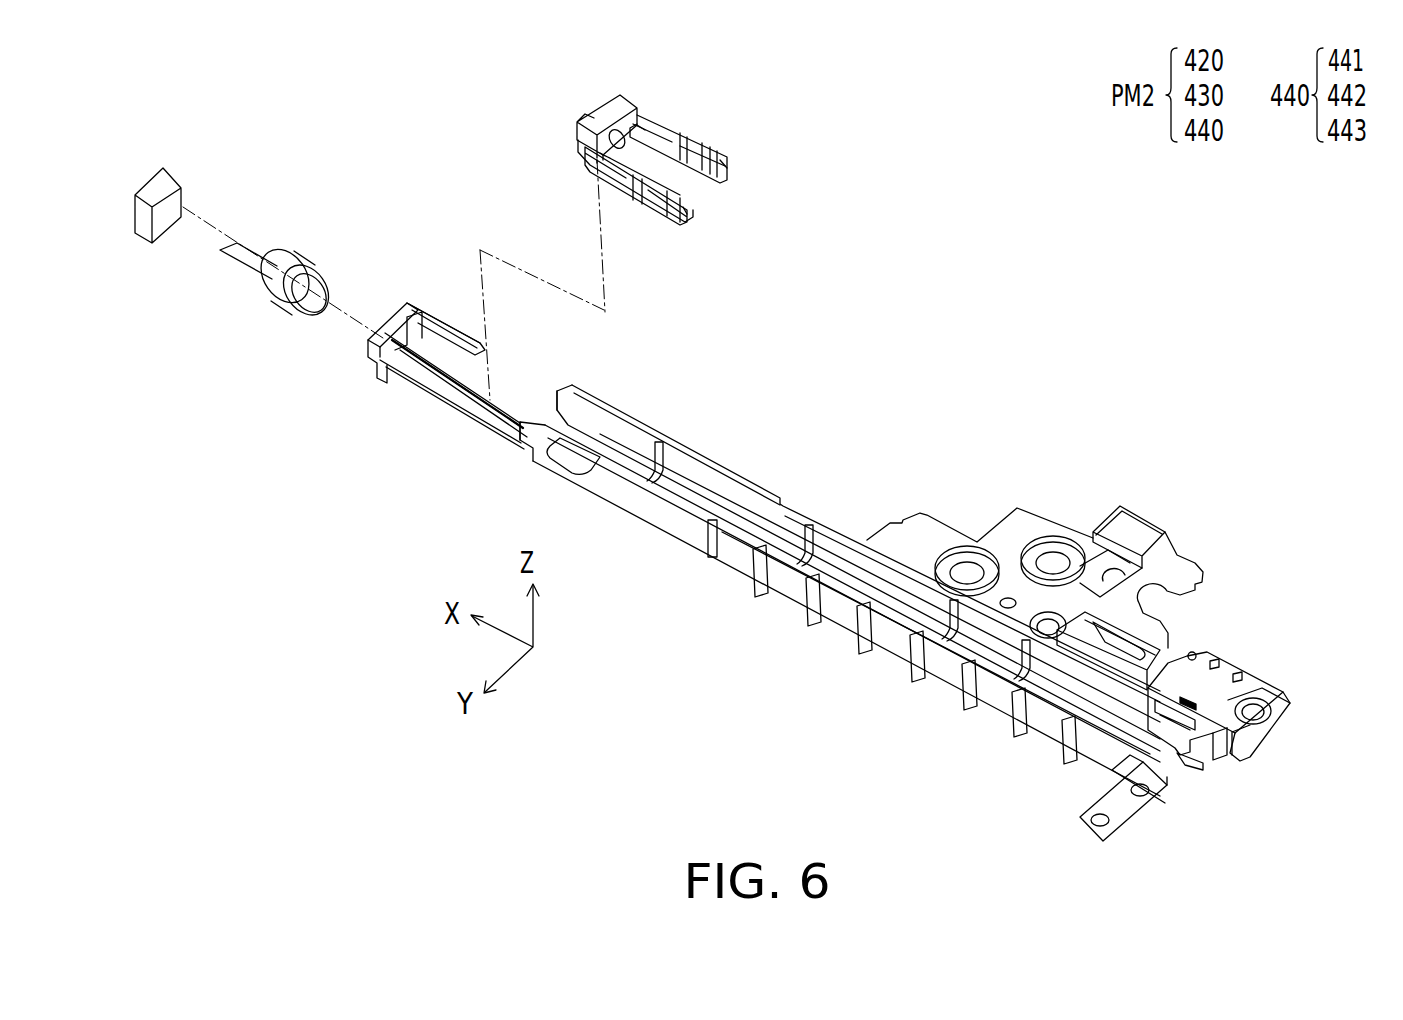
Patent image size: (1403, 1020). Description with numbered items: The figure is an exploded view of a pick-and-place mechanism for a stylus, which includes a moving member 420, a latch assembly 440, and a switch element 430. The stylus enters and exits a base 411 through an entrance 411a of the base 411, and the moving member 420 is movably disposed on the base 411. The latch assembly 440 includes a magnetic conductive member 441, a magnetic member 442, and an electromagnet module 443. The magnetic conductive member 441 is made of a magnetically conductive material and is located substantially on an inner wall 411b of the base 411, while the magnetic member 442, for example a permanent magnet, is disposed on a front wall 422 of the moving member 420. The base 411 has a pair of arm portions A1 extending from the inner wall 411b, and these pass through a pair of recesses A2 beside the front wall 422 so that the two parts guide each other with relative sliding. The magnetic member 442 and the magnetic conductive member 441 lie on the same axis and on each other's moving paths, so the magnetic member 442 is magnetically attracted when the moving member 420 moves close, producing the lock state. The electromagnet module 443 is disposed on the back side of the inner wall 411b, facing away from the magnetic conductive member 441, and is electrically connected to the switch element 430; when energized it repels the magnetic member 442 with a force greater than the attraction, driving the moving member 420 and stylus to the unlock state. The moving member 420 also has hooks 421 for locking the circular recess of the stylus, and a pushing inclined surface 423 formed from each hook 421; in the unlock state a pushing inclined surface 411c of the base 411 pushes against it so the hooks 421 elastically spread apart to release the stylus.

The base 411 is at (835, 523).
The entrance 411a is at (1197, 747).
The inner wall 411b is at (408, 303).
The pushing inclined surface 411c is at (554, 378).
The moving member 420 is at (759, 122).
The hook 421 is at (644, 155).
The front wall 422 is at (607, 110).
The pushing inclined surface 423 is at (692, 203).
The switch element 430 is at (165, 170).
The latch assembly 440 is at (412, 234).
The magnetic conductive member 441 is at (367, 358).
The magnetic member 442 is at (583, 110).
The electromagnet module 443 is at (283, 298).
The arm portions A1 is at (444, 322).
The recesses A2 is at (588, 152).